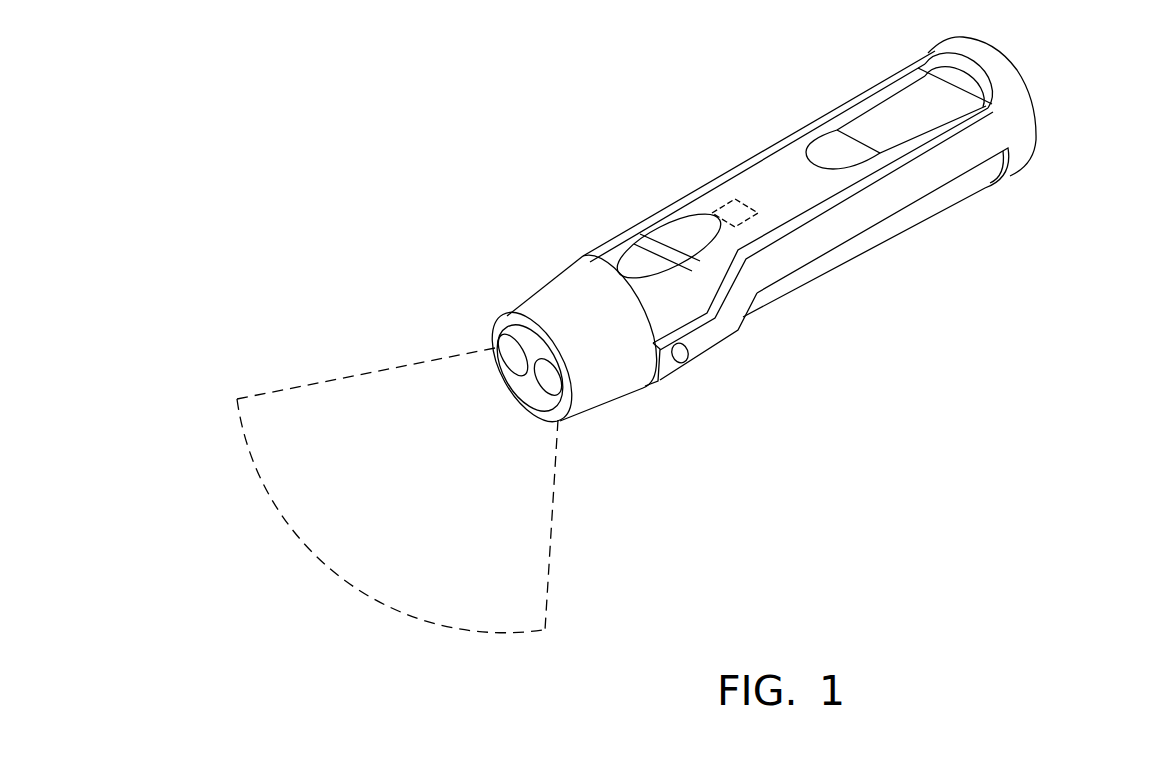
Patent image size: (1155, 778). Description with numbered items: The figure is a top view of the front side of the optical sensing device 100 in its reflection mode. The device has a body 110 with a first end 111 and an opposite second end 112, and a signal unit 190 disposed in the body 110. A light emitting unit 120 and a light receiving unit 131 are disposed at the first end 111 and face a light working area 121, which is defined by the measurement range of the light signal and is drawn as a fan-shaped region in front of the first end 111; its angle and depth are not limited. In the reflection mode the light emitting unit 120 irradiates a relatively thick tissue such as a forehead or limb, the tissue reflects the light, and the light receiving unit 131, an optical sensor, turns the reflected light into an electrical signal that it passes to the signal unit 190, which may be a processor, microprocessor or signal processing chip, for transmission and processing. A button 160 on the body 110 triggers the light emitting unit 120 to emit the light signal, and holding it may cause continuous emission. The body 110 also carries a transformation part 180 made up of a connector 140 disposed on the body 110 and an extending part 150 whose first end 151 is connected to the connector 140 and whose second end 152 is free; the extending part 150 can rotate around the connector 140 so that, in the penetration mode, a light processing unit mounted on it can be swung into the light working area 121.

The optical sensing device 100 is at (362, 92).
The body 110 is at (767, 188).
The first end 111 is at (497, 358).
The second end 112 is at (953, 83).
The light emitting unit 120 is at (553, 387).
The light working area 121 is at (555, 560).
The light receiving unit 131 is at (513, 360).
The connector 140 is at (680, 356).
The extending part 150 is at (885, 200).
The first end 151 is at (713, 333).
The second end 152 is at (1022, 120).
The button 160 is at (652, 255).
The transformation part 180 is at (983, 480).
The signal unit 190 is at (712, 213).